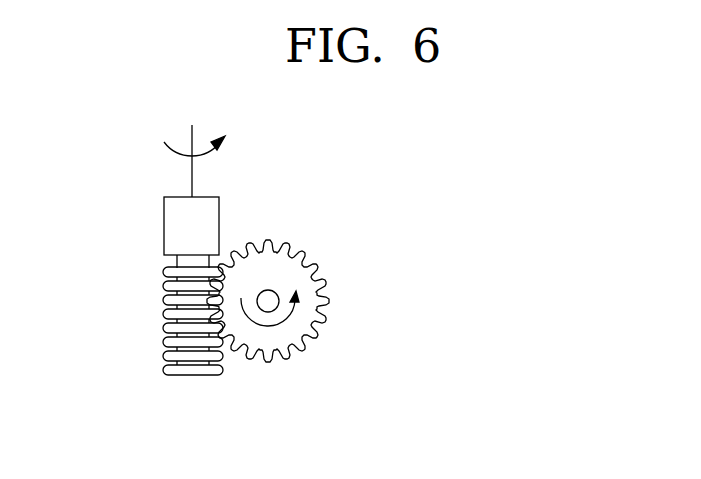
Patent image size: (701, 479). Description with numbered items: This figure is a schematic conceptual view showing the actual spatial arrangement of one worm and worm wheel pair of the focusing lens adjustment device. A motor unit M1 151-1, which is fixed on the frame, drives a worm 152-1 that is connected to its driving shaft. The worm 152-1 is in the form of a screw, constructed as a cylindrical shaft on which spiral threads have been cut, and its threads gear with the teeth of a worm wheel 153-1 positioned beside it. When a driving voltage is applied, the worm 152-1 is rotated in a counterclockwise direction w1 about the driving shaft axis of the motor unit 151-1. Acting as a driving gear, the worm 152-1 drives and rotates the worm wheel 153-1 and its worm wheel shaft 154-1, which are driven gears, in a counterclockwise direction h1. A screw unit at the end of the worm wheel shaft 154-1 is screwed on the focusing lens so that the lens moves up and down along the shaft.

The motor unit M1 151-1 is at (210, 218).
The worm 152-1 is at (165, 300).
The worm wheel 153-1 is at (325, 300).
The worm wheel shaft 154-1 is at (268, 303).
The counterclockwise direction w1 is at (207, 141).
The counterclockwise direction h1 is at (275, 303).